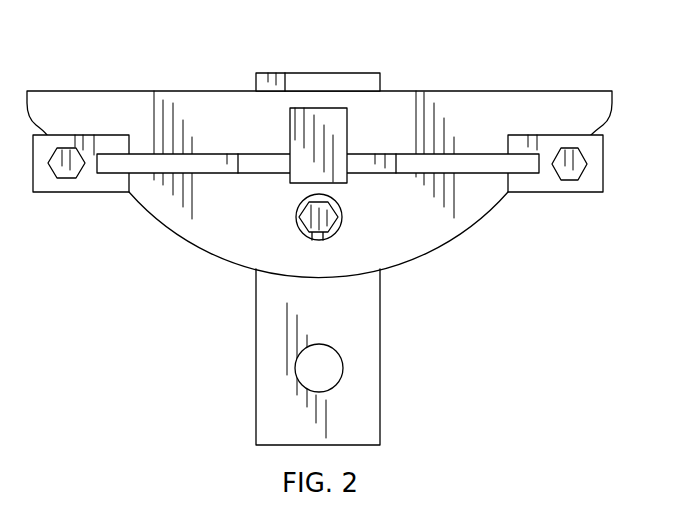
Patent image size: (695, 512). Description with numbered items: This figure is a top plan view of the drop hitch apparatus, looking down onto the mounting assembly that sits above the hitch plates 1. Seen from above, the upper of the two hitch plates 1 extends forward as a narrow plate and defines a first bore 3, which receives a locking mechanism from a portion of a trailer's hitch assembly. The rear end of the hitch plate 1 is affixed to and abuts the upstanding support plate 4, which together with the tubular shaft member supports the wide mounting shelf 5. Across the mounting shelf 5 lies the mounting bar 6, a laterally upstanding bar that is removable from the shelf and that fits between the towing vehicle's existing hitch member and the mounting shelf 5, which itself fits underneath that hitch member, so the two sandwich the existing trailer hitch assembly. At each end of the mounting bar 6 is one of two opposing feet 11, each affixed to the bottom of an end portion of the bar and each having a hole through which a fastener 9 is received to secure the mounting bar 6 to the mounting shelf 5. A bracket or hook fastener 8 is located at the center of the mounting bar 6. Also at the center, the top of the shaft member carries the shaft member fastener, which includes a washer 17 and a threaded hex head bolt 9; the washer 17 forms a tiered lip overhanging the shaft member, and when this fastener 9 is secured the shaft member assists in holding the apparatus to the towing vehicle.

The hitch plates 1 is at (363, 407).
The first bore 3 is at (343, 366).
The support plate 4 is at (367, 73).
The mounting shelf 5 is at (518, 93).
The mounting bar 6 is at (479, 152).
The bracket or hook fastener 8 is at (290, 122).
The fastener 9 is at (66, 178).
The feet 11 is at (603, 158).
The washer 17 is at (338, 222).